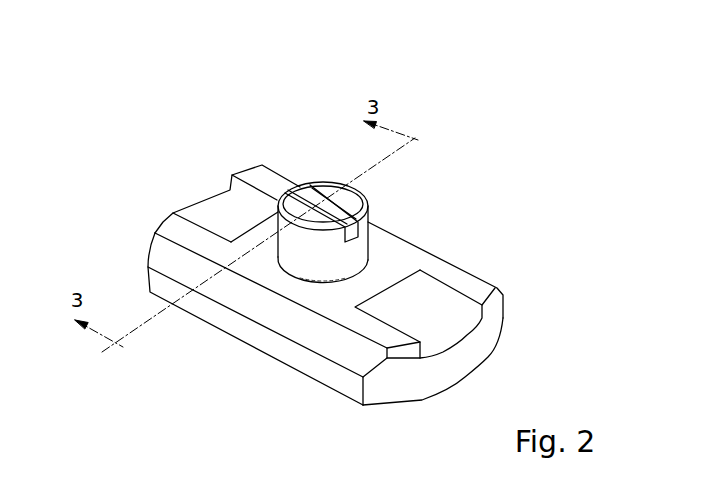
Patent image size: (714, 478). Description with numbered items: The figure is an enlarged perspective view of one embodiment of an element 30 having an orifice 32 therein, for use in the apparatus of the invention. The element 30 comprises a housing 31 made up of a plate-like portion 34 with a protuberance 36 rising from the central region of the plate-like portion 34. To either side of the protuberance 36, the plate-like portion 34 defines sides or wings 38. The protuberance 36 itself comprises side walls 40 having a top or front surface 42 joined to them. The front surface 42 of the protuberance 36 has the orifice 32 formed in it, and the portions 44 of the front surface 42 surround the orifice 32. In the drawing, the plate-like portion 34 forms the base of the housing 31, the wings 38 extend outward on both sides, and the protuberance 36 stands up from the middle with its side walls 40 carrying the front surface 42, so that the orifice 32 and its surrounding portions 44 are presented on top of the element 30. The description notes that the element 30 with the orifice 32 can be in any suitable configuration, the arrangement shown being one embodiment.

The element 30 is at (486, 163).
The housing 31 is at (232, 293).
The orifice 32 is at (307, 180).
The plate-like portion 34 is at (395, 252).
The protuberance 36 is at (305, 265).
The sides or wings 38 is at (178, 230).
The side walls 40 is at (330, 263).
The top or front surface 42 is at (362, 195).
The portions surrounding the orifice 44 is at (327, 185).